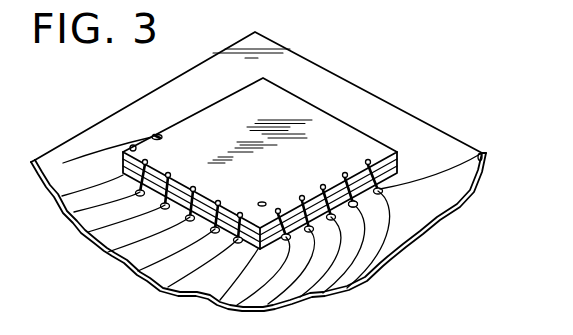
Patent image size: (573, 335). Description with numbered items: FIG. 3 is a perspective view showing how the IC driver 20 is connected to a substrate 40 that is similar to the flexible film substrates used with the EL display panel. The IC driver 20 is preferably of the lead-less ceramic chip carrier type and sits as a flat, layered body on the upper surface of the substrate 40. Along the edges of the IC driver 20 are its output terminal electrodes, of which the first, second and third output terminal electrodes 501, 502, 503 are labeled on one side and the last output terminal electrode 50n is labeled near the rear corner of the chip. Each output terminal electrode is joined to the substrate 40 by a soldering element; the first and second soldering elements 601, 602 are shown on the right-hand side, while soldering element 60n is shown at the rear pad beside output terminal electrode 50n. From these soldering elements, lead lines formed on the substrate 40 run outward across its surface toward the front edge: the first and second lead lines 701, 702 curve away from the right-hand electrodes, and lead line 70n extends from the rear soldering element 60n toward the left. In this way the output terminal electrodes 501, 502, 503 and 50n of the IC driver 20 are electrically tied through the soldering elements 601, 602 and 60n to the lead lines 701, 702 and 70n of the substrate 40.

The IC driver 20 is at (298, 117).
The substrate 40 is at (378, 112).
The output terminal electrode 50n is at (163, 137).
The output terminal electrode 501 is at (372, 157).
The output terminal electrode 502 is at (346, 172).
The output terminal electrode 503 is at (322, 185).
The soldering element 60n is at (157, 133).
The soldering element 601 is at (482, 151).
The soldering element 602 is at (362, 202).
The lead line 70n is at (100, 147).
The lead line 701 is at (388, 233).
The lead line 702 is at (357, 255).